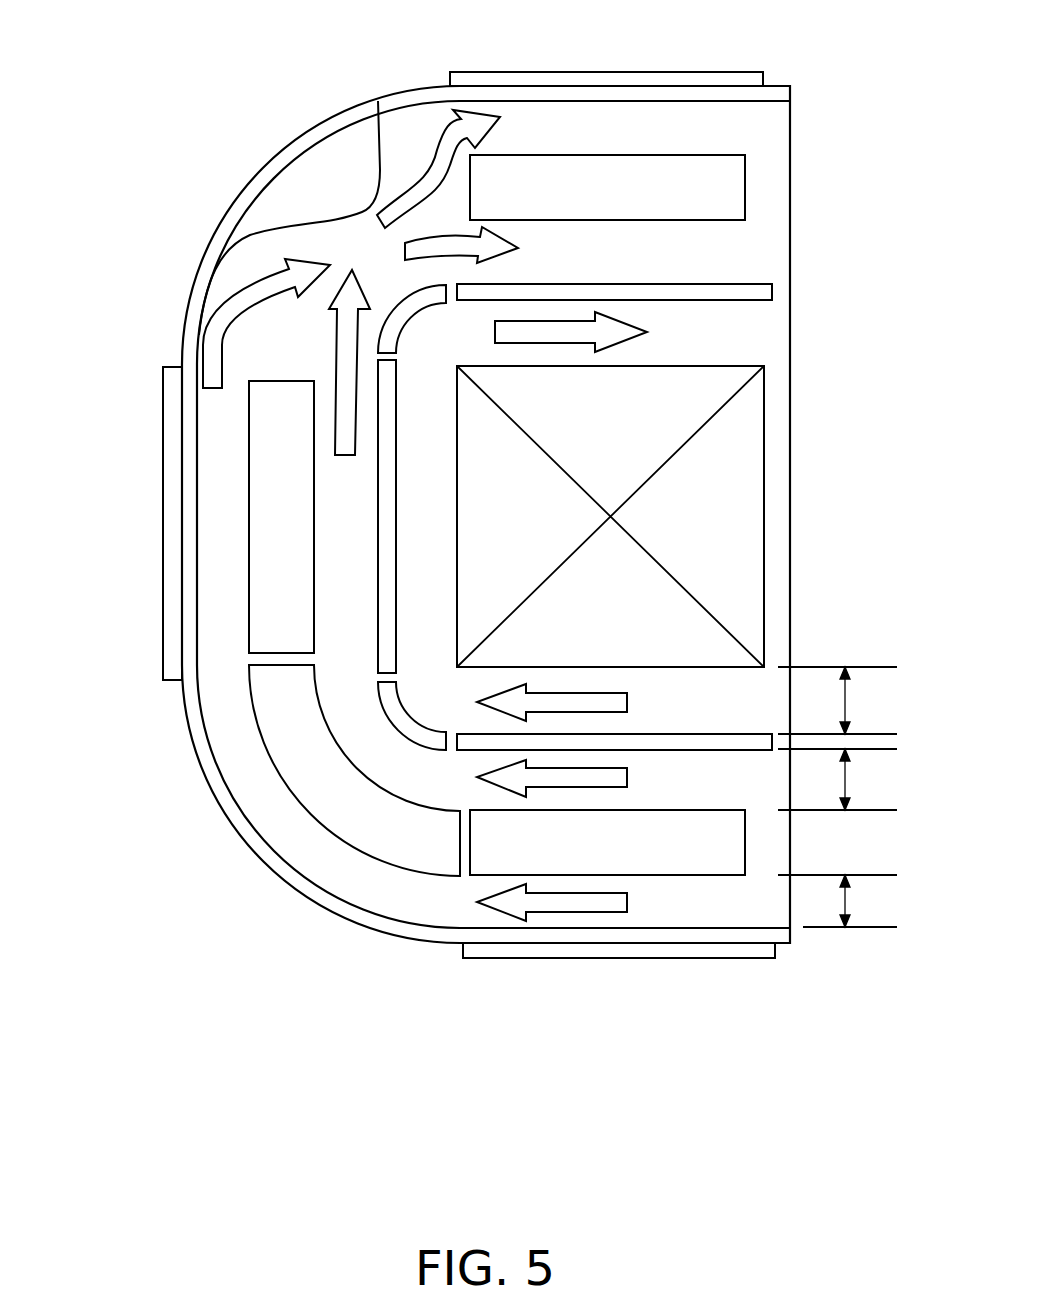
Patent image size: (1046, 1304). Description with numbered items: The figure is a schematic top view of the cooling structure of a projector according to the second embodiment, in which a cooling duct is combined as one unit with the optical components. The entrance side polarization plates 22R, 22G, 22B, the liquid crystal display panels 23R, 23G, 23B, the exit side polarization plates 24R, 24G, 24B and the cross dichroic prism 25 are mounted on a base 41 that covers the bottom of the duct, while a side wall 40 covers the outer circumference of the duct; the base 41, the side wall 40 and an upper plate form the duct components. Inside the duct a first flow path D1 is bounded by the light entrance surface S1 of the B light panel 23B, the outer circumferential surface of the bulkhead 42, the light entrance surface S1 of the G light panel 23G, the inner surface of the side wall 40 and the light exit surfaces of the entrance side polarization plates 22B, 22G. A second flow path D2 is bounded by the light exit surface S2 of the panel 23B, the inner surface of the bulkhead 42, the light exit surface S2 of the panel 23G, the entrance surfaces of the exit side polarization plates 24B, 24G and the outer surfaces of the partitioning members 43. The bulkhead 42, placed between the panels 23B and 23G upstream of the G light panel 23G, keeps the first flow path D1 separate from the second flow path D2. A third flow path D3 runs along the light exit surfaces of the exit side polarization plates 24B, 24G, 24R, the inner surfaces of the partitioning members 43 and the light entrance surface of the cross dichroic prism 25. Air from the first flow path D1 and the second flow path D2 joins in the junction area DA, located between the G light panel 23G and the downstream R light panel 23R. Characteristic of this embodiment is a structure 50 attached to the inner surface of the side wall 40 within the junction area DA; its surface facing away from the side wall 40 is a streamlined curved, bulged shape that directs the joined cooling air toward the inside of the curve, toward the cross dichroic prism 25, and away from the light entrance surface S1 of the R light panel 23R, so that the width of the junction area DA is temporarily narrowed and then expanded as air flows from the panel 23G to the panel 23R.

The R light entrance side polarization plate 22R is at (605, 78).
The G light entrance side polarization plate 22G is at (170, 652).
The B light entrance side polarization plate 22B is at (723, 952).
The R light liquid crystal display panel 23R is at (725, 186).
The G light liquid crystal display panel 23G is at (290, 395).
The B light liquid crystal display panel 23B is at (657, 857).
The R light exit side polarization plate 24R is at (727, 292).
The G light exit side polarization plate 24G is at (386, 500).
The B light exit side polarization plate 24B is at (690, 742).
The cross dichroic prism 25 is at (727, 477).
The side wall 40 is at (275, 867).
The base 41 is at (725, 332).
The bulkhead 42 is at (348, 813).
The partitioning members 43 is at (427, 300).
The structure 50 is at (293, 200).
The junction area DA is at (357, 239).
The light entrance surface S1 is at (693, 156).
The light exit surface S2 is at (693, 220).
The first flow path D1 is at (839, 901).
The second flow path D2 is at (839, 779).
The third flow path D3 is at (839, 700).